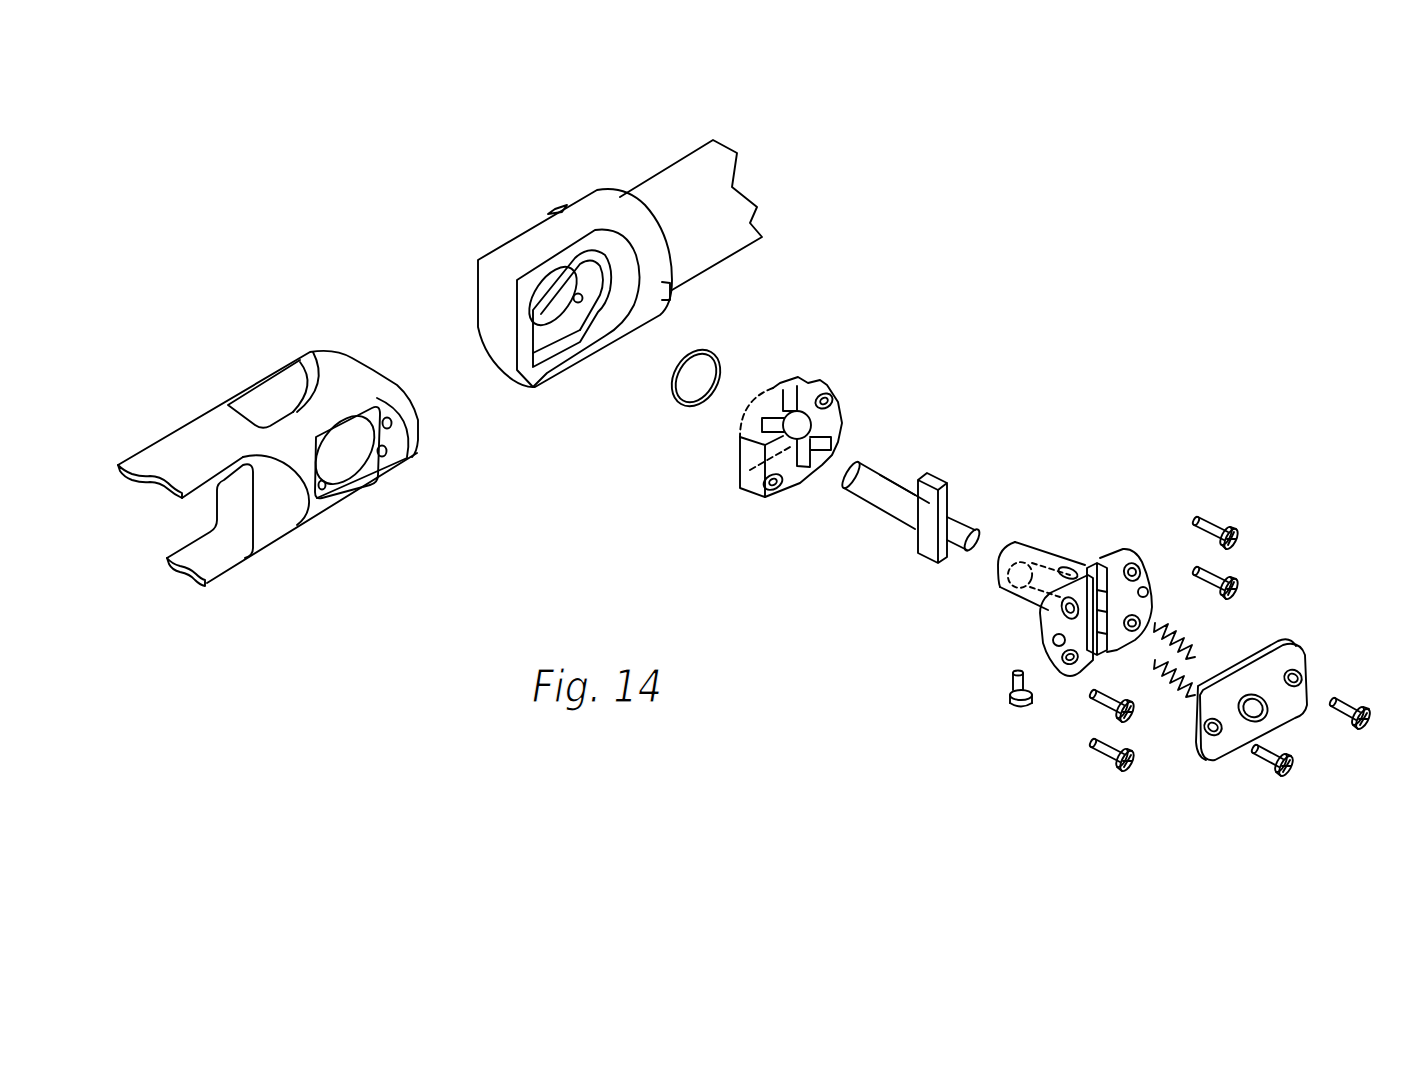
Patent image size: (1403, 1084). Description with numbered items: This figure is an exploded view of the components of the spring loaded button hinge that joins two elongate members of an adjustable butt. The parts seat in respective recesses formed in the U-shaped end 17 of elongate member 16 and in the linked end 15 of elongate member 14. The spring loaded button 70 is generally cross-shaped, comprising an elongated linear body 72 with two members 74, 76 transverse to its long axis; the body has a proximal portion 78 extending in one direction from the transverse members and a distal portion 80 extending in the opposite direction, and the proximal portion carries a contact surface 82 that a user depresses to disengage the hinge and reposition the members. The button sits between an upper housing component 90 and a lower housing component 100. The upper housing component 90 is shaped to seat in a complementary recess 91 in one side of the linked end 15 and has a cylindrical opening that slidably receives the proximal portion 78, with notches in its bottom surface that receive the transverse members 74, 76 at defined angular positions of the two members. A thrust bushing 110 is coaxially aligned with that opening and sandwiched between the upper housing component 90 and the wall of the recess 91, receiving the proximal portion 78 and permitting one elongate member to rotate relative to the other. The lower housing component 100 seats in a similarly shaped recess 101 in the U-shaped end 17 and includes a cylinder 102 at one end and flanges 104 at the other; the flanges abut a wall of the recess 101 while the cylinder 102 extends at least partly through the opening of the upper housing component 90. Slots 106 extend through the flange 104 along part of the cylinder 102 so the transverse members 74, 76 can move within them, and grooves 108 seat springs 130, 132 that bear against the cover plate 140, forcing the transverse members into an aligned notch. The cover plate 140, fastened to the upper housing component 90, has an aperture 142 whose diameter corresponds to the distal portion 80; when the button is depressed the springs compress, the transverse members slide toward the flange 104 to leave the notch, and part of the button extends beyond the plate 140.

The elongate member 14 is at (667, 167).
The linked end 15 is at (527, 294).
The elongate member 16 is at (267, 550).
The U-shaped end 17 is at (286, 422).
The spring loaded button 70 is at (940, 496).
The elongated linear body 72 is at (862, 511).
The transverse member 74 is at (912, 540).
The transverse member 76 is at (942, 473).
The proximal portion 78 is at (915, 475).
The distal portion 80 is at (958, 518).
The contact surface 82 is at (854, 462).
The upper housing component 90 is at (812, 380).
The recess 91 is at (557, 347).
The lower housing component 100 is at (1098, 604).
The recess 101 is at (363, 480).
The cylinder 102 is at (1037, 545).
The flange 104 is at (1043, 620).
The slot 106 is at (1103, 583).
The groove 108 is at (1130, 570).
The thrust bushing 110 is at (673, 405).
The spring 130 is at (1185, 632).
The spring 132 is at (1180, 690).
The cover plate 140 is at (1290, 705).
The aperture 142 is at (1260, 708).